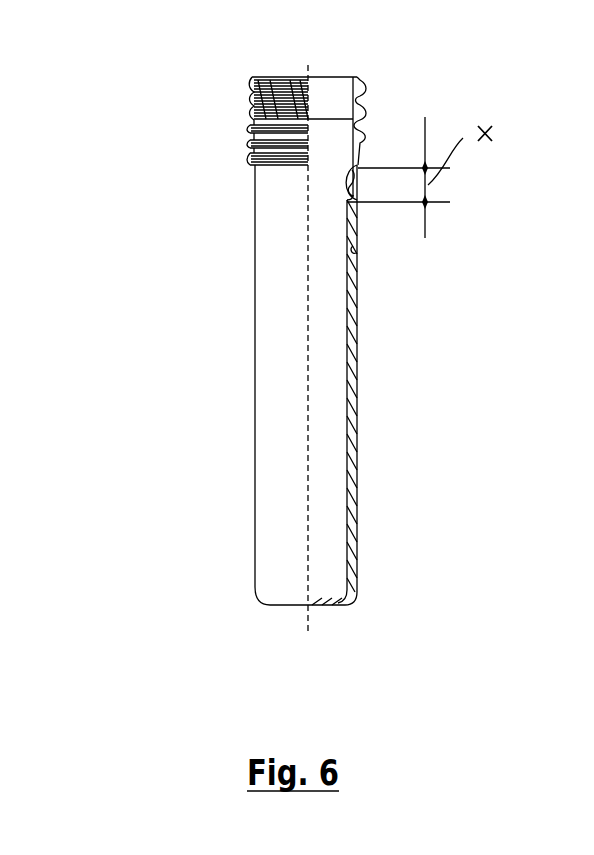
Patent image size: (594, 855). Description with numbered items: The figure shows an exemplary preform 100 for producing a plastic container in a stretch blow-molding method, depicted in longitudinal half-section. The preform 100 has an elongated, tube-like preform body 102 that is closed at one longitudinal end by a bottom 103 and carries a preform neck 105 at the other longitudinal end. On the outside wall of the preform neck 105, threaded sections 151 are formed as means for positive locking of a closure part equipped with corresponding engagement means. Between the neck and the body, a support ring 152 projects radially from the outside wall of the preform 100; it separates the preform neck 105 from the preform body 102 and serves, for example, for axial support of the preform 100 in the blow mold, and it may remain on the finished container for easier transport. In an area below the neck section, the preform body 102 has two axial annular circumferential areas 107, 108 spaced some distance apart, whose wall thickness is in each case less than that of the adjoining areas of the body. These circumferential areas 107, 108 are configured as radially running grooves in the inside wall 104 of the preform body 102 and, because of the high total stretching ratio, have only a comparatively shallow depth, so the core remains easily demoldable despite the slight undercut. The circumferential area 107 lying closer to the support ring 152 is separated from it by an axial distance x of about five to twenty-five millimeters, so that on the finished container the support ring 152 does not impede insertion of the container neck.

The preform 100 is at (106, 288).
The preform body 102 is at (255, 430).
The bottom 103 is at (330, 607).
The inside wall 104 is at (347, 391).
The preform neck 105 is at (187, 121).
The annular circumferential area 107 is at (363, 158).
The annular circumferential area 108 is at (357, 252).
The threaded sections 151 is at (252, 95).
The support ring 152 is at (252, 165).